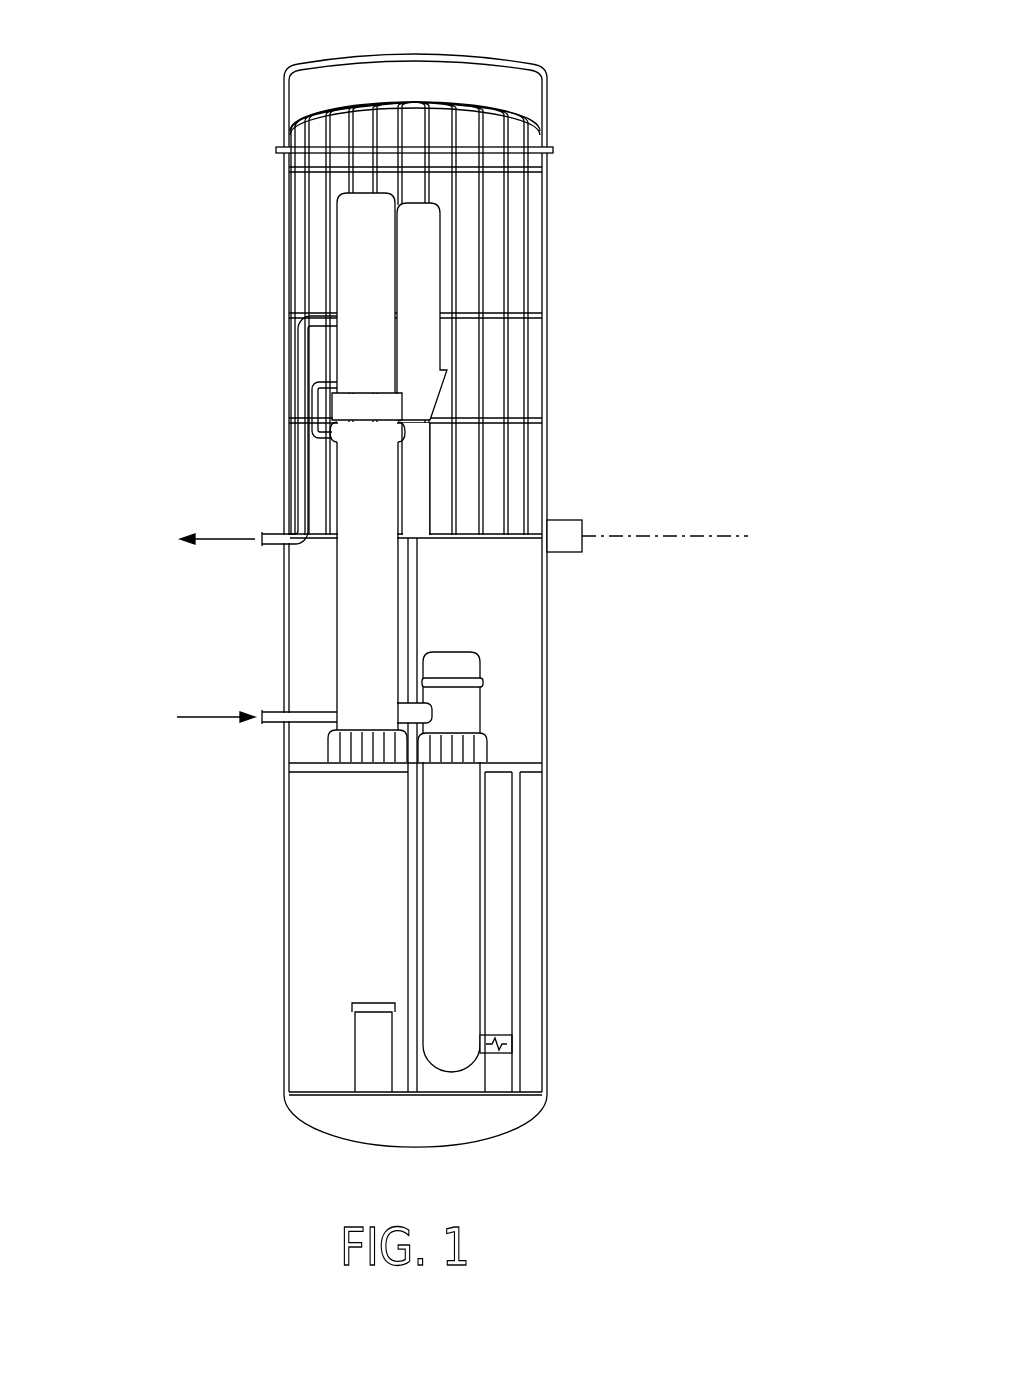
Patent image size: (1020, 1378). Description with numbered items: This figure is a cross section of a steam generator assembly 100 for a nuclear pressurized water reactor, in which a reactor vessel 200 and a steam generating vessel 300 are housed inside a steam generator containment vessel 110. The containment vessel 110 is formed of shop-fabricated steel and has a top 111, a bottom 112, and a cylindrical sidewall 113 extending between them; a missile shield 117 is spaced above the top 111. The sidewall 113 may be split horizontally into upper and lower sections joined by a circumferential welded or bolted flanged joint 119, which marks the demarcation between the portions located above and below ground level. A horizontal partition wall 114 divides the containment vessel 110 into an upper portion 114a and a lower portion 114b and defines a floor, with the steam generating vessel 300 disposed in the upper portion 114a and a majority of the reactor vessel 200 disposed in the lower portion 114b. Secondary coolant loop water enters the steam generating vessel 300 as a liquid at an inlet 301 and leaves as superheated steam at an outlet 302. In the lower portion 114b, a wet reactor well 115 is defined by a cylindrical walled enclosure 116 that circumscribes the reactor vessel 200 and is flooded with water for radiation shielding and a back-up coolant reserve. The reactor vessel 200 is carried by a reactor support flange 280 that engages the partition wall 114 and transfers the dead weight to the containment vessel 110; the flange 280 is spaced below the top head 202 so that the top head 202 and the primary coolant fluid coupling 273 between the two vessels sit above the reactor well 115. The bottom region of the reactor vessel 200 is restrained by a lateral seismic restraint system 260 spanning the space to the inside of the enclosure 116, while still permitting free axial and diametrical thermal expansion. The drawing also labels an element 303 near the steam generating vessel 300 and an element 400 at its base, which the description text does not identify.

The steam generator assembly 100 is at (213, 58).
The steam generator containment vessel 110 is at (591, 223).
The top 111 is at (536, 105).
The bottom 112 is at (547, 1123).
The cylindrical sidewall 113 is at (563, 352).
The horizontal partition wall 114 is at (308, 767).
The upper portion 114a is at (533, 580).
The lower portion 114b is at (306, 999).
The wet reactor well 115 is at (500, 992).
The walled enclosure 116 is at (520, 922).
The missile shield 117 is at (520, 46).
The flanged joint 119 is at (615, 494).
The reactor vessel 200 is at (483, 899).
The top head 202 is at (480, 698).
The lateral seismic restraint system 260 is at (529, 1041).
The primary coolant fluid coupling 273 is at (418, 710).
The reactor support flange 280 is at (487, 750).
The steam generating vessel 300 is at (337, 607).
The inlet 301 is at (275, 723).
The outlet 302 is at (272, 533).
The loop pipe 303 is at (313, 400).
The base 400 is at (375, 757).